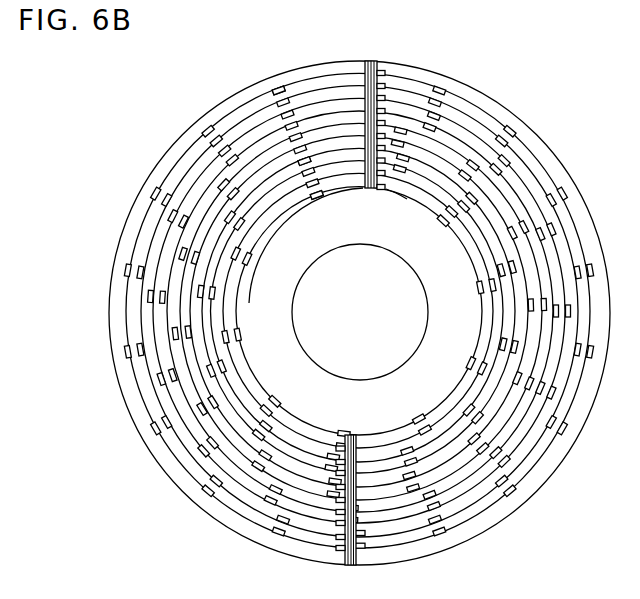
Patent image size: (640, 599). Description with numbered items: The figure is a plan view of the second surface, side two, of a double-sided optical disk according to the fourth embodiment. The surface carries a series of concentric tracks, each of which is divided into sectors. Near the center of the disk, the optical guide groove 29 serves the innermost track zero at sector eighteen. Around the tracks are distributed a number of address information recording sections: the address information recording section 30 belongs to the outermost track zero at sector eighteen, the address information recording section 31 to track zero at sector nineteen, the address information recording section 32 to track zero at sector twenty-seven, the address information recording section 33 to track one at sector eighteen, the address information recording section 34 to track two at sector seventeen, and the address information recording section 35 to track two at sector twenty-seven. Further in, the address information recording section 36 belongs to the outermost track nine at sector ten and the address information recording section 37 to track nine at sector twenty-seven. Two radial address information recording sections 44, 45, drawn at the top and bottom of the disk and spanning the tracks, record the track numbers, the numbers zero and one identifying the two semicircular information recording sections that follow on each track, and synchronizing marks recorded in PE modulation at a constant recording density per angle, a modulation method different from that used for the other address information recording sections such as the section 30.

The optical guide groove 29 is at (406, 198).
The address information recording section 30 is at (395, 189).
The address information recording section 31 is at (446, 219).
The address information recording section 32 is at (287, 201).
The address information recording section 33 is at (385, 172).
The address information recording section 34 is at (382, 158).
The address information recording section 35 is at (289, 172).
The address information recording section 36 is at (379, 70).
The address information recording section 37 is at (281, 78).
The address information recording section 44 is at (365, 62).
The address information recording section 45 is at (358, 556).